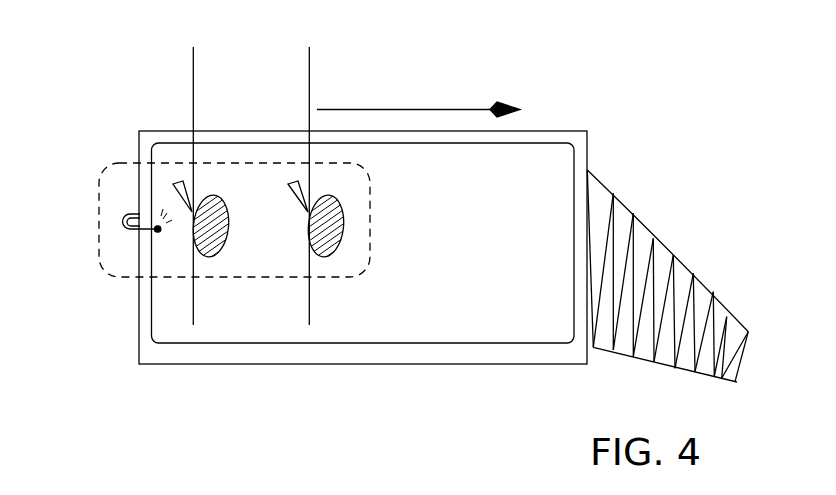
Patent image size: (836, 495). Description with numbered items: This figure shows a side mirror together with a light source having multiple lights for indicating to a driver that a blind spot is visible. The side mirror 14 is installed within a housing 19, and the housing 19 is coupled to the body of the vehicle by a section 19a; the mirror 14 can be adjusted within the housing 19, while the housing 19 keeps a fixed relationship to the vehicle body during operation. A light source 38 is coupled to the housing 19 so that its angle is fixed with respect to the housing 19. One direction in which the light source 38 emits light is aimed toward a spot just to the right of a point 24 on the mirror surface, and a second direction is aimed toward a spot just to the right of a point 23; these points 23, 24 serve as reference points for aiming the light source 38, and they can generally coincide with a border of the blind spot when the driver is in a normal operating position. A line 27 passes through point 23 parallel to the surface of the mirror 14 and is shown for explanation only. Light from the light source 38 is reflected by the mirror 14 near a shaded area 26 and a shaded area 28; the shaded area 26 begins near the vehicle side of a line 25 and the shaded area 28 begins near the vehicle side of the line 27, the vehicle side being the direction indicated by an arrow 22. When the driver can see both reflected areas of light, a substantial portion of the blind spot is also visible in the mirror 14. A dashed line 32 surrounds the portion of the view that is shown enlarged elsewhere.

The side mirror 14 is at (457, 338).
The housing 19 is at (548, 130).
The section 19a is at (662, 263).
The arrow 22 is at (418, 90).
The point 23 is at (183, 181).
The point 24 is at (298, 181).
The line 25 is at (319, 171).
The shaded area 26 is at (348, 262).
The line 27 is at (189, 171).
The shaded area 28 is at (222, 265).
The dashed line 32 is at (108, 272).
The light source 38 is at (124, 227).